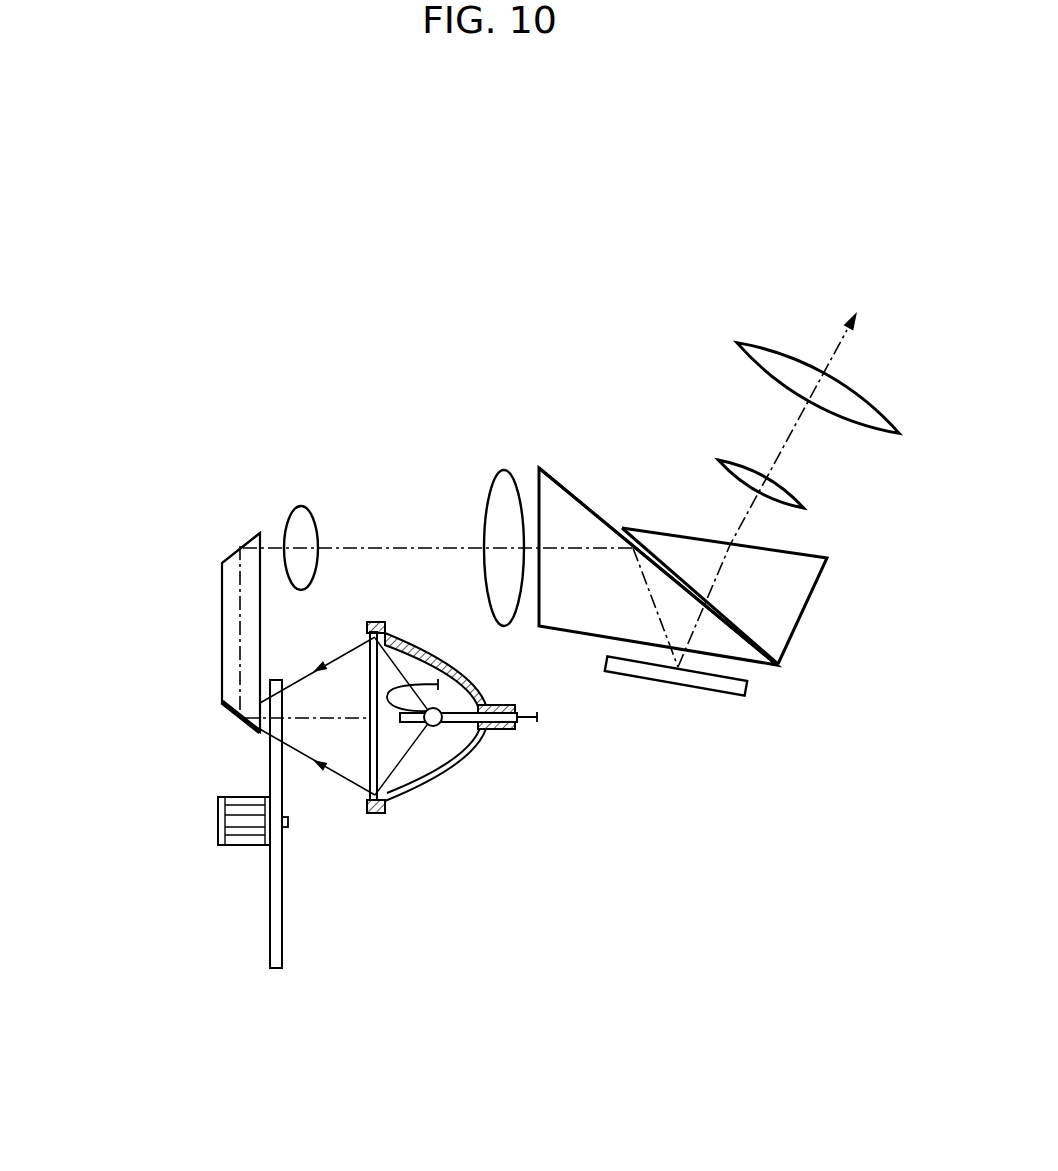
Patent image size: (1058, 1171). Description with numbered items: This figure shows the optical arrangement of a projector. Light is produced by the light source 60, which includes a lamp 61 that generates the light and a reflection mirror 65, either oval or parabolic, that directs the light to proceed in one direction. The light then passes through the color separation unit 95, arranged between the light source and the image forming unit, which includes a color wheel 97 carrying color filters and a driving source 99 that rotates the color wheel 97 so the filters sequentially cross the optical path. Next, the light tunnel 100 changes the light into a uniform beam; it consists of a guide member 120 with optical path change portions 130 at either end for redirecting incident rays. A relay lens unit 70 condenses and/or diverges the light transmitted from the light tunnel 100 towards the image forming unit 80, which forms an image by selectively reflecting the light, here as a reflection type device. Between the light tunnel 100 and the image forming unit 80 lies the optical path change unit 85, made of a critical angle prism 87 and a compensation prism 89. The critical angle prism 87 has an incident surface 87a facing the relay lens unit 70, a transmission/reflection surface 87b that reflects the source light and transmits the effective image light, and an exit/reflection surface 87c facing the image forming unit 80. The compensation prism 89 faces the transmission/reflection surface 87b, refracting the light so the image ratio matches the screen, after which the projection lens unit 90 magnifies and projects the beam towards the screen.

The light tunnel 100 is at (140, 617).
The guide member 120 is at (216, 563).
The optical path change portions 130 is at (216, 533).
The relay lens unit 70 is at (503, 464).
The light source 60 is at (449, 790).
The lamp 61 is at (450, 707).
The reflection mirror 65 is at (473, 753).
The color separation unit 95 is at (253, 913).
The color wheel 97 is at (277, 937).
The driving source 99 is at (222, 820).
The optical path change unit 85 is at (830, 601).
The critical angle prism 87 is at (550, 488).
The incident surface 87a is at (525, 607).
The transmission/reflection surface 87b is at (567, 510).
The exit/reflection surface 87c is at (760, 670).
The compensation prism 89 is at (788, 608).
The image forming unit 80 is at (676, 680).
The projection lens unit 90 is at (728, 338).